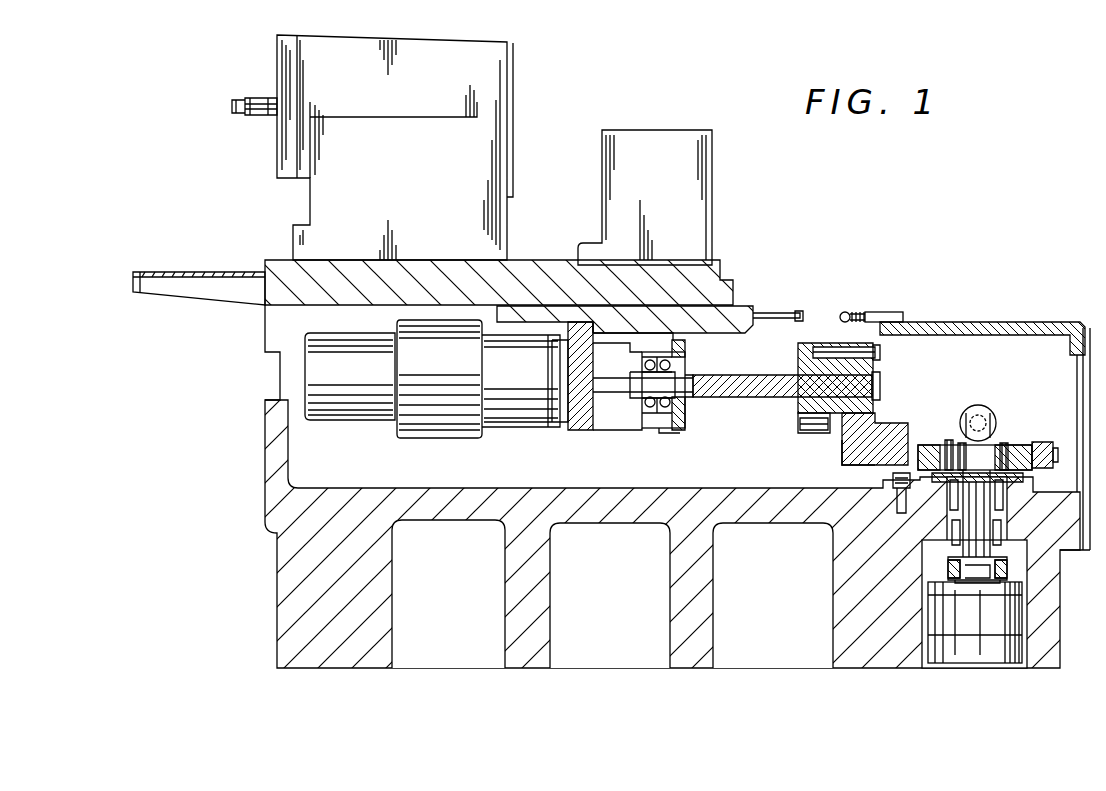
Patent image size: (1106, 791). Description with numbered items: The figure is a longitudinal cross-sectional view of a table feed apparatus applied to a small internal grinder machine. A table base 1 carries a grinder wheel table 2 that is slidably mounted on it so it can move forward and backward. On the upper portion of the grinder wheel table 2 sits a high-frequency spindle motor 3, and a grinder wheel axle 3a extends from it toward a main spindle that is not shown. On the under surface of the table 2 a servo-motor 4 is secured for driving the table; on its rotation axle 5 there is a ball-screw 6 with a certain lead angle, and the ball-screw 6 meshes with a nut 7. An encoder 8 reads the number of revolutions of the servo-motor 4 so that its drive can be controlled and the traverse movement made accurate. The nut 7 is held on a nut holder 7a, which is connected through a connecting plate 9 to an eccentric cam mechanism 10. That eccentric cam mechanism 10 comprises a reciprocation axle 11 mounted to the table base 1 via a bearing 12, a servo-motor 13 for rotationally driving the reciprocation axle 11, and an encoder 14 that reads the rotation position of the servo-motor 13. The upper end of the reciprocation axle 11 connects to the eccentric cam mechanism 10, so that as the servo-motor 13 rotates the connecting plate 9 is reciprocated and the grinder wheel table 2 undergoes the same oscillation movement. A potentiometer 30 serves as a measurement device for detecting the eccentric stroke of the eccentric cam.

The table base 1 is at (275, 531).
The grinder wheel table 2 is at (282, 283).
The high-frequency spindle motor 3 is at (498, 158).
The grinder wheel axle 3a is at (228, 108).
The servo-motor 4 is at (426, 428).
The rotation axle 5 is at (618, 386).
The ball-screw 6 is at (773, 375).
The nut 7 is at (798, 406).
The nut holder 7a is at (842, 456).
The encoder 8 is at (330, 413).
The connecting plate 9 is at (895, 428).
The eccentric cam mechanism 10 is at (1000, 428).
The reciprocation axle 11 is at (1003, 527).
The bearing 12 is at (1025, 560).
The servo-motor 13 is at (973, 625).
The encoder 14 is at (1012, 653).
The potentiometer 30 is at (878, 312).